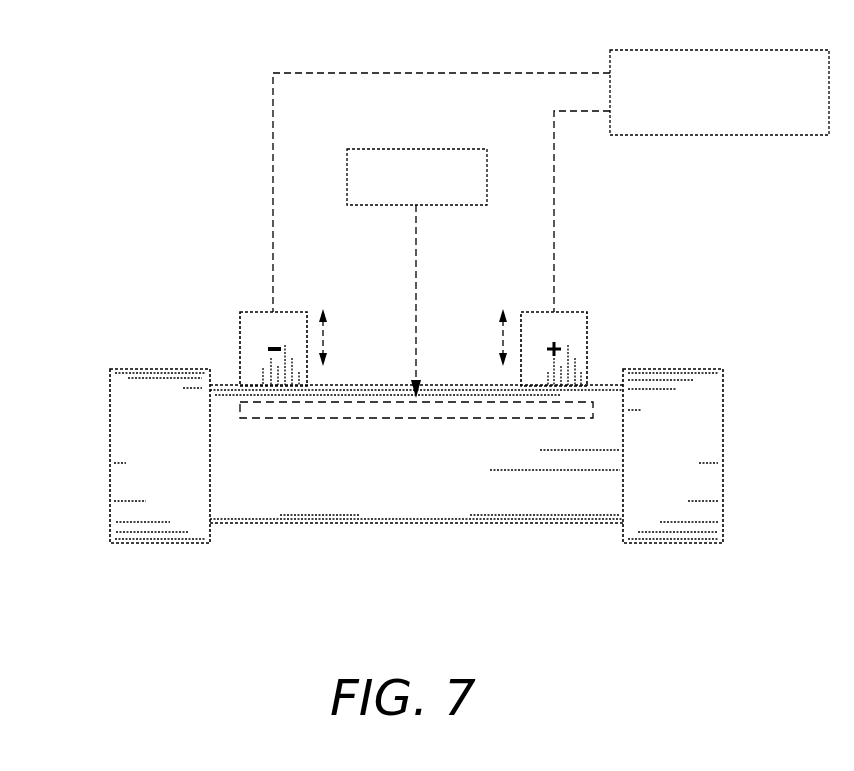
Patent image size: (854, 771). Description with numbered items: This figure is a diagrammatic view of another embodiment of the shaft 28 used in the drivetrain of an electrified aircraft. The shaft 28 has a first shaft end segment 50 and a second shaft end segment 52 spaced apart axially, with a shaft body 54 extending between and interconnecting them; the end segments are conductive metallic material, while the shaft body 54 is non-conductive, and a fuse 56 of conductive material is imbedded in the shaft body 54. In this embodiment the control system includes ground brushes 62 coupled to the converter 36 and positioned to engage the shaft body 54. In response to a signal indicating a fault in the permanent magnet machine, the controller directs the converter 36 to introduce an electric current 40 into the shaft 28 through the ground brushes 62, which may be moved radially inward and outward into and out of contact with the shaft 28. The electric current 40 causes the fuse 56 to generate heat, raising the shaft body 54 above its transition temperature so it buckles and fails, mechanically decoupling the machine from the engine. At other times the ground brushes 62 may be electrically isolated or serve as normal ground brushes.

The shaft 28 is at (112, 244).
The converter 36 is at (773, 50).
The fuse 56 is at (477, 149).
The first shaft end segment 50 is at (110, 457).
The second shaft end segment 52 is at (723, 457).
The shaft body 54 is at (417, 525).
The electric current 40 is at (343, 413).
The ground brushes 62 is at (240, 350).